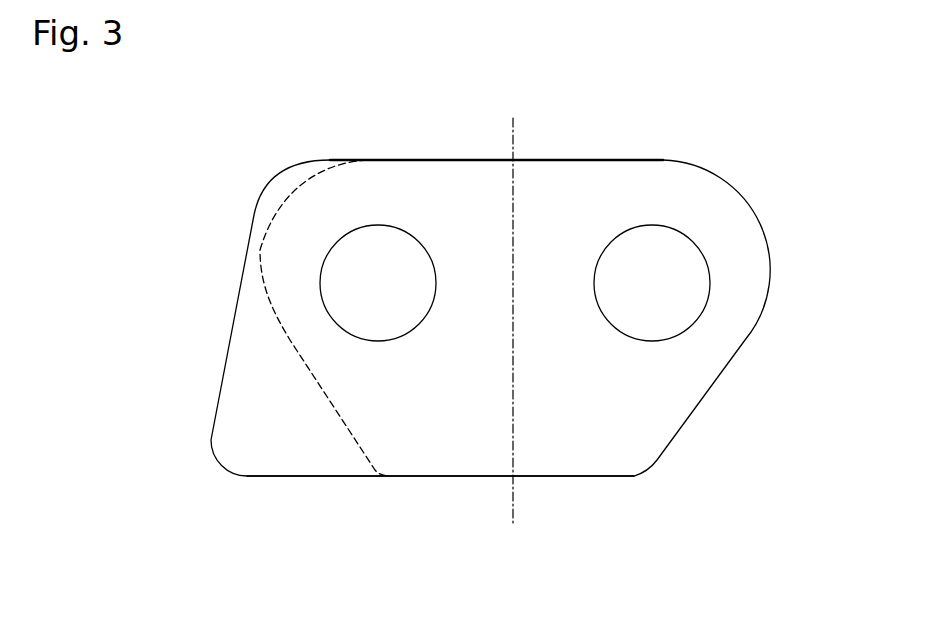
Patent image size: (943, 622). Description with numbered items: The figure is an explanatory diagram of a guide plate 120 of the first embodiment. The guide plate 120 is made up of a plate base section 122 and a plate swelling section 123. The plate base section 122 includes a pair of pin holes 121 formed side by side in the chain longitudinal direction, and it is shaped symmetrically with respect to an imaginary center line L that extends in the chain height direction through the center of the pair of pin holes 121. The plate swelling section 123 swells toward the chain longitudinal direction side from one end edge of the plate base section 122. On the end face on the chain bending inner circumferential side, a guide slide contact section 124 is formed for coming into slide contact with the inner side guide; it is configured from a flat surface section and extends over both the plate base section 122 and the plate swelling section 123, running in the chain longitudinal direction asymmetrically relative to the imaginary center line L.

The guide plate 120 is at (464, 315).
The pin holes 121 is at (376, 228).
The plate base section 122 is at (648, 383).
The plate swelling section 123 is at (255, 402).
The guide slide contact section 124 is at (446, 504).